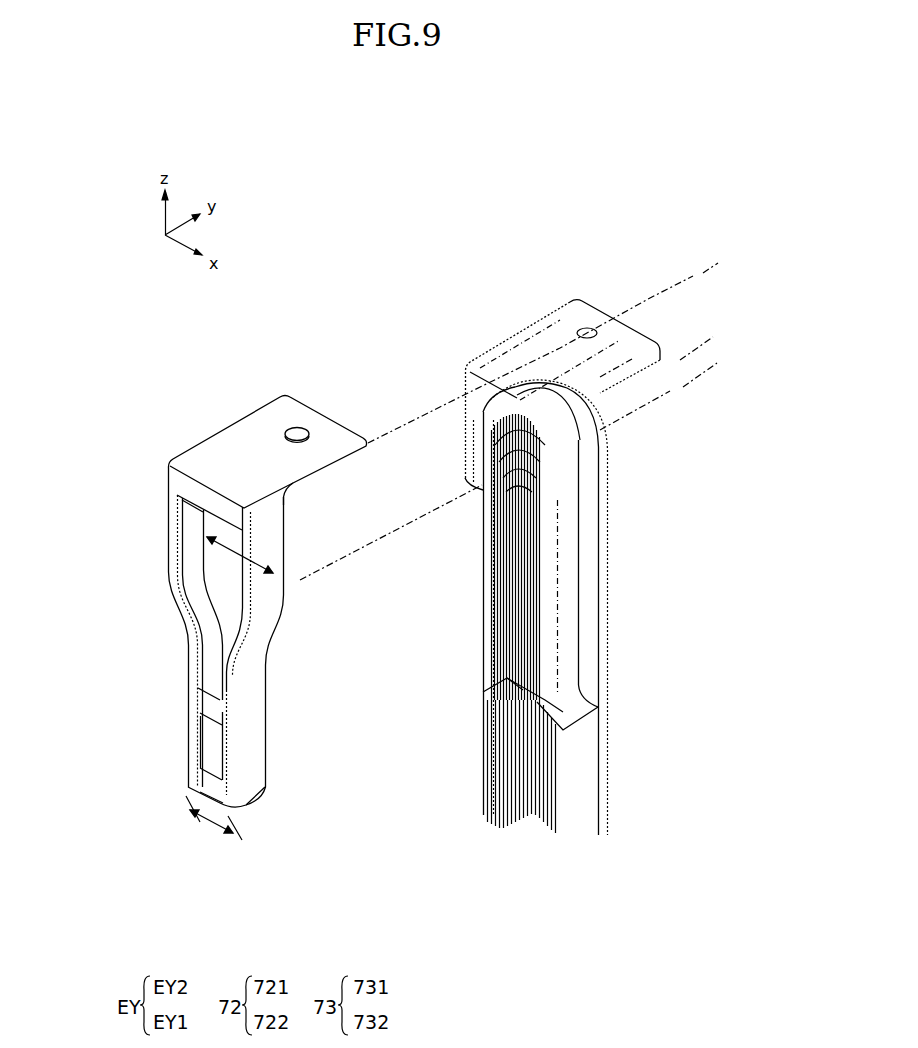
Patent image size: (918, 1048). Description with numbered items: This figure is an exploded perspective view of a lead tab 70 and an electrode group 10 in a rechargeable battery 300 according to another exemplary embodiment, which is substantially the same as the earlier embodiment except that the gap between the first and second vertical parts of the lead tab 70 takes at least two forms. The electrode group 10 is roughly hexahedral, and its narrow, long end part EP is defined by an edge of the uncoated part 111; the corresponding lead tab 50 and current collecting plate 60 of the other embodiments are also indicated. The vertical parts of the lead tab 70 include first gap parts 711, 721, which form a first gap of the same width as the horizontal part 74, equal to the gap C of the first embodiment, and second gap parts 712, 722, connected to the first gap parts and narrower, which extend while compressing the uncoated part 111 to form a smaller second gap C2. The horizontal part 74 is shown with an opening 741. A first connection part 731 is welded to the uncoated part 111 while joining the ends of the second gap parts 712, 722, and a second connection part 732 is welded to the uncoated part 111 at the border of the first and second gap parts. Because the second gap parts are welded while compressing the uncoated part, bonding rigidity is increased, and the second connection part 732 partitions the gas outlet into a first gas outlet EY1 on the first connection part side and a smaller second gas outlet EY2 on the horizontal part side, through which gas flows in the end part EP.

The rechargeable battery 300 is at (341, 222).
The electrode group 10 is at (650, 318).
The lead tab 50 is at (500, 337).
The current collecting plate 60 is at (550, 617).
The lead tab 70 is at (165, 430).
The horizontal part 74 is at (240, 440).
The hole 741 is at (296, 425).
The first gap part 711 is at (267, 548).
The second gap part 712 is at (252, 717).
The first gap part 721 is at (168, 560).
The second gap part 722 is at (190, 733).
The first connection part 731 is at (243, 800).
The second connection part 732 is at (203, 705).
The uncoated part 111 is at (593, 730).
The end part EP is at (540, 790).
The first gas outlet EY1 is at (200, 753).
The second gas outlet EY2 is at (190, 598).
The gap C is at (207, 537).
The second gap C2 is at (214, 825).